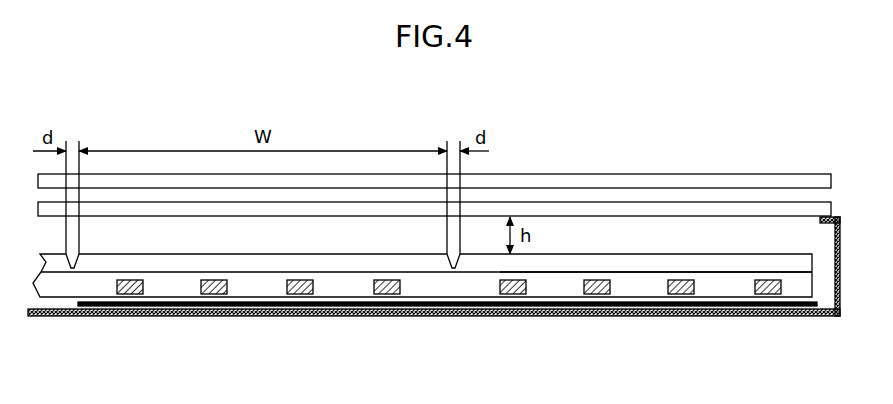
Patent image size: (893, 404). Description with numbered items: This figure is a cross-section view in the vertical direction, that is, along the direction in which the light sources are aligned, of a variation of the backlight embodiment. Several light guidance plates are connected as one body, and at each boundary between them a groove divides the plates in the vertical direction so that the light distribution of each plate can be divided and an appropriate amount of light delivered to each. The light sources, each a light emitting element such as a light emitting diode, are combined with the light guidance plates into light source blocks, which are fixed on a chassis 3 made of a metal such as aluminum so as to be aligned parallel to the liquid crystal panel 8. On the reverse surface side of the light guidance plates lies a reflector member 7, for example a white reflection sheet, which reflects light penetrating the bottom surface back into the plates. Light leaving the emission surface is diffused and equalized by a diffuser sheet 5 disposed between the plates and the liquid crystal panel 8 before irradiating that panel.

The chassis 3 is at (728, 318).
The diffuser sheet 5 is at (721, 208).
The reflector member 7 is at (415, 307).
The liquid crystal panel 8 is at (638, 175).